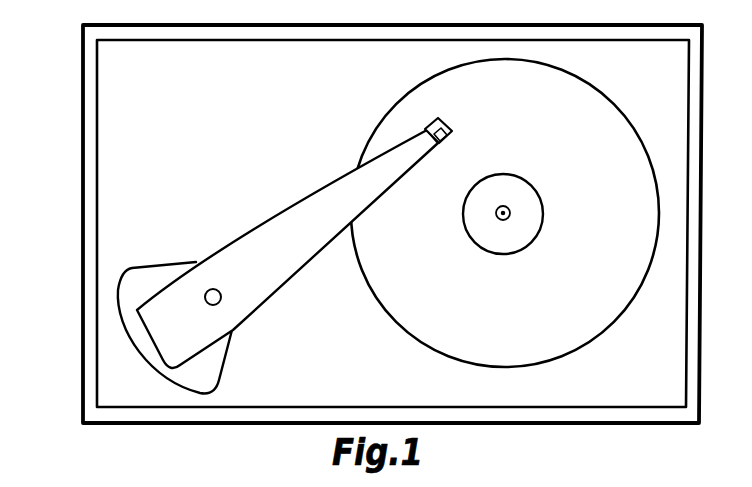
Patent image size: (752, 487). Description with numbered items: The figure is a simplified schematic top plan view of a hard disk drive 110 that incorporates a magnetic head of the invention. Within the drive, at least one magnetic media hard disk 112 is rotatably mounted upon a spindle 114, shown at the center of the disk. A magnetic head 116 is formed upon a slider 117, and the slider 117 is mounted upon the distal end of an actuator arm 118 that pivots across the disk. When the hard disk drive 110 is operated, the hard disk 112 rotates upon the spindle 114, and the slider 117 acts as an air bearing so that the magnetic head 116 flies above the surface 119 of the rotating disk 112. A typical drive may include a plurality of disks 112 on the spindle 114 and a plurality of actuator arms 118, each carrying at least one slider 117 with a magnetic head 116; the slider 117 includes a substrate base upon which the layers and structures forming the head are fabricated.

The hard disk drive 110 is at (82, 203).
The magnetic media hard disk 112 is at (418, 348).
The spindle 114 is at (573, 222).
The magnetic head 116 is at (463, 116).
The slider 117 is at (446, 140).
The actuator arm 118 is at (268, 220).
The surface 119 is at (387, 282).